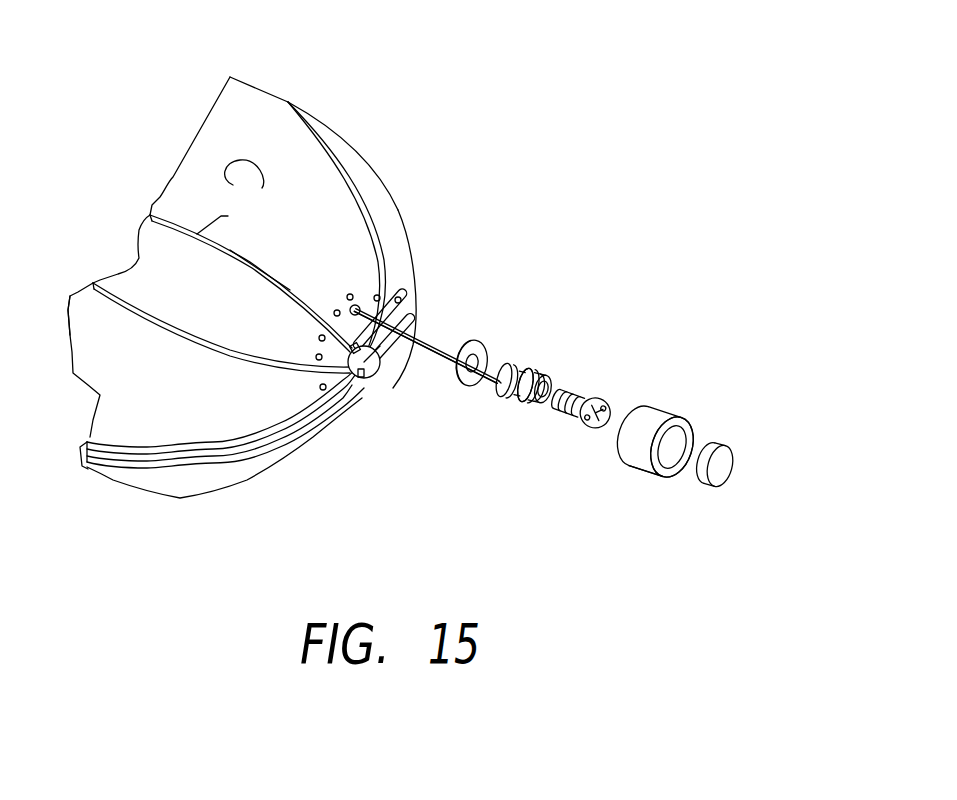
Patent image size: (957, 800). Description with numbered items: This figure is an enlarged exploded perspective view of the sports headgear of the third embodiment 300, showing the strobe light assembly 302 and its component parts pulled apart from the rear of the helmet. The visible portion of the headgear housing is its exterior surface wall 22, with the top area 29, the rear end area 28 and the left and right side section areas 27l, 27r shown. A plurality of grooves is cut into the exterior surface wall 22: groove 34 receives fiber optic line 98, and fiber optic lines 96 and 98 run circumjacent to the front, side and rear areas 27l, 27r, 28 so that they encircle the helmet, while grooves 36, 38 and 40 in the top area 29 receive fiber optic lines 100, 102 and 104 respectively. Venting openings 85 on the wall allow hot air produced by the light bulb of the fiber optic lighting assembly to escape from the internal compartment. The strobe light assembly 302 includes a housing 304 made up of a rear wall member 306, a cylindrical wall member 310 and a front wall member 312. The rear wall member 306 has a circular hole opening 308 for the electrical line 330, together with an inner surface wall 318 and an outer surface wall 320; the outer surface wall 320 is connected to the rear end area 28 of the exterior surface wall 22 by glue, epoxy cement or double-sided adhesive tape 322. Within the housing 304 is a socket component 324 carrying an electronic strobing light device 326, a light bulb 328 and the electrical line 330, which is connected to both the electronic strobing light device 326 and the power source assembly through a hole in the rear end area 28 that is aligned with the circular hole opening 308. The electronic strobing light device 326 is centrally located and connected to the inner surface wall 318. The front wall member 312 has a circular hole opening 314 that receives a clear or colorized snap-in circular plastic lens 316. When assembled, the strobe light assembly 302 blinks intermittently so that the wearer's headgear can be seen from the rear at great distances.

The top area 29 is at (200, 197).
The groove 36 is at (320, 135).
The fiber optic line 100 is at (343, 157).
The side section area 27r is at (414, 240).
The exterior surface wall 22 is at (258, 186).
The groove 38 is at (165, 228).
The fiber optic line 102 is at (250, 263).
The fiber optic line 104 is at (175, 325).
The groove 40 is at (108, 298).
The venting openings 85 is at (322, 355).
The circular hole opening 308 is at (377, 295).
The rear end area 28 is at (343, 370).
The electrical line 330 is at (422, 350).
The fiber optic line 96 is at (418, 332).
The fiber optic line 98 is at (405, 290).
The groove 34 is at (126, 448).
The side section area 27l is at (227, 477).
The third embodiment 300 is at (598, 203).
The strobe light assembly 302 is at (685, 295).
The double-sided adhesive tape 322 is at (470, 340).
The rear wall member 306 is at (507, 355).
The inner surface wall 318 is at (524, 366).
The electronic strobing light device 326 is at (546, 373).
The socket component 324 is at (554, 376).
The outer surface wall 320 is at (500, 385).
The light bulb 328 is at (600, 428).
The housing 304 is at (665, 397).
The front wall member 312 is at (692, 423).
The circular hole opening 314 is at (672, 457).
The cylindrical wall member 310 is at (645, 453).
The snap-in circular plastic lens 316 is at (723, 467).